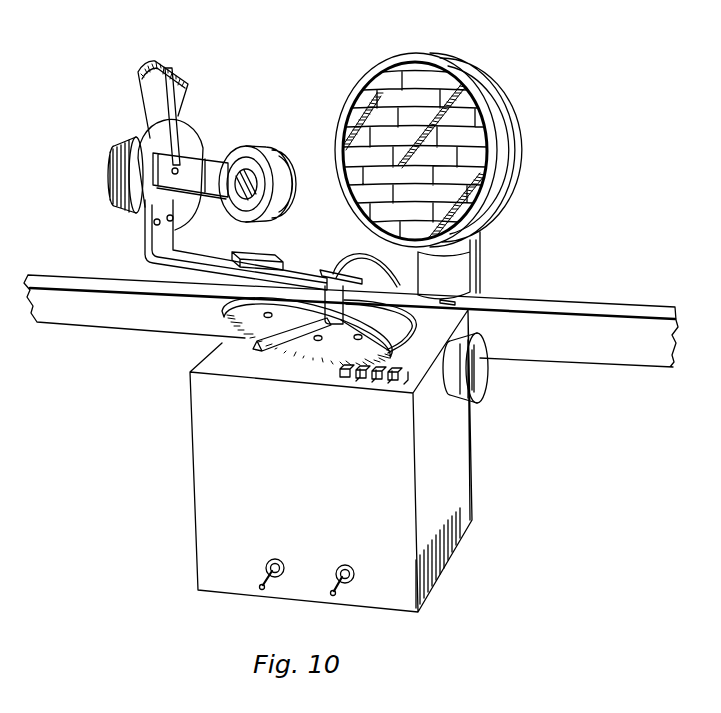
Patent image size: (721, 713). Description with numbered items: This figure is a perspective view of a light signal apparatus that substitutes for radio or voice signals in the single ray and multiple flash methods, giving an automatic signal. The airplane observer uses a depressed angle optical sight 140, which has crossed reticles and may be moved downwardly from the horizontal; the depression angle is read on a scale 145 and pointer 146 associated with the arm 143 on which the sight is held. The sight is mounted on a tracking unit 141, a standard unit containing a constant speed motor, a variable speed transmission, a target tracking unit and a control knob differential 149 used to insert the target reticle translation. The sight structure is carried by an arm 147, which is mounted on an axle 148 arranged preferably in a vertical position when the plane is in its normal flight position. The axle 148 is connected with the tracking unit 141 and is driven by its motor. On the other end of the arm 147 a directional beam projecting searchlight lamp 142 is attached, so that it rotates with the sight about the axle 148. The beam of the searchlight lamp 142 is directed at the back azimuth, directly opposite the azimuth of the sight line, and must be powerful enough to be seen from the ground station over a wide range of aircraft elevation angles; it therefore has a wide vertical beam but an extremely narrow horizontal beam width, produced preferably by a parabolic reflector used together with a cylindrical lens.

The depressed angle optical sight 140 is at (275, 193).
The tracking unit 141 is at (458, 423).
The directional beam projecting searchlight lamp 142 is at (503, 118).
The arm 143 is at (212, 170).
The scale 145 is at (187, 80).
The pointer 146 is at (167, 70).
The arm 147 is at (197, 255).
The axle 148 is at (348, 313).
The control knob differential 149 is at (488, 382).